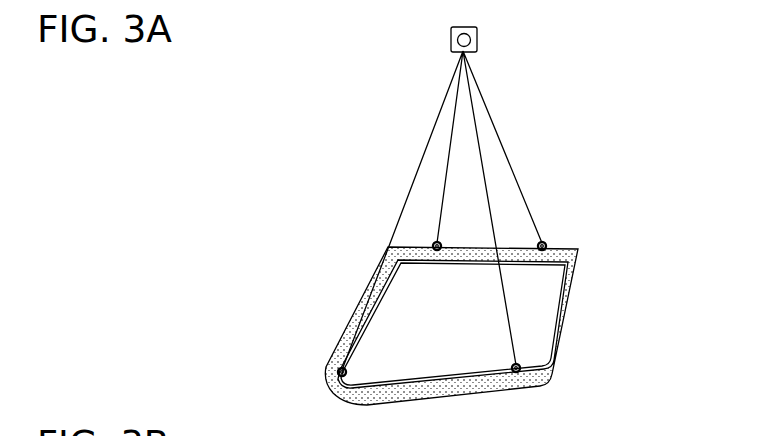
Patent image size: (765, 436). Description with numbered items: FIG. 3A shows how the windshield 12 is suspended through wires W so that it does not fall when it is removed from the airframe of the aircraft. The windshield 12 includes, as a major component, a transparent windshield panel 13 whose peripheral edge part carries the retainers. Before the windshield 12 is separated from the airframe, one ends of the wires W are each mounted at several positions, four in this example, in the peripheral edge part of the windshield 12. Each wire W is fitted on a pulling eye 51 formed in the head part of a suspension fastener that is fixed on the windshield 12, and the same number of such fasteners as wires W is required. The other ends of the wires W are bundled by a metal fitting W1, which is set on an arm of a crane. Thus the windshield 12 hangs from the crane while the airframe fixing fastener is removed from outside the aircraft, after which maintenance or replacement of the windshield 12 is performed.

The metal fitting W1 is at (477, 41).
The wire W is at (449, 110).
The windshield 12 is at (577, 270).
The windshield panel 13 is at (473, 362).
The pulling eye 51 is at (439, 241).